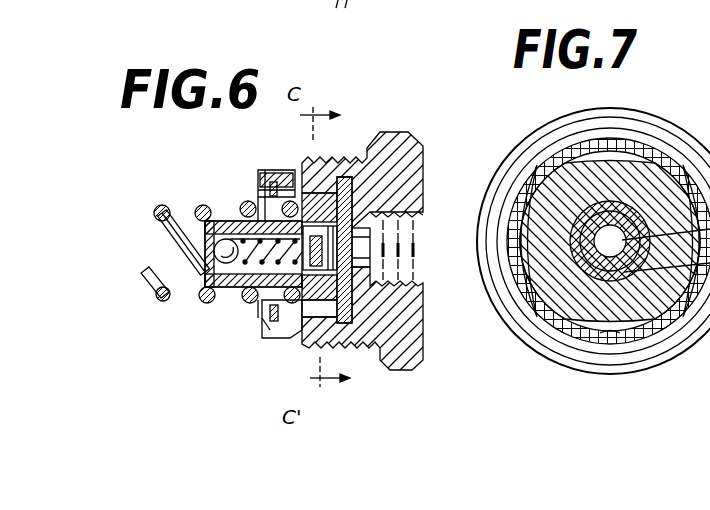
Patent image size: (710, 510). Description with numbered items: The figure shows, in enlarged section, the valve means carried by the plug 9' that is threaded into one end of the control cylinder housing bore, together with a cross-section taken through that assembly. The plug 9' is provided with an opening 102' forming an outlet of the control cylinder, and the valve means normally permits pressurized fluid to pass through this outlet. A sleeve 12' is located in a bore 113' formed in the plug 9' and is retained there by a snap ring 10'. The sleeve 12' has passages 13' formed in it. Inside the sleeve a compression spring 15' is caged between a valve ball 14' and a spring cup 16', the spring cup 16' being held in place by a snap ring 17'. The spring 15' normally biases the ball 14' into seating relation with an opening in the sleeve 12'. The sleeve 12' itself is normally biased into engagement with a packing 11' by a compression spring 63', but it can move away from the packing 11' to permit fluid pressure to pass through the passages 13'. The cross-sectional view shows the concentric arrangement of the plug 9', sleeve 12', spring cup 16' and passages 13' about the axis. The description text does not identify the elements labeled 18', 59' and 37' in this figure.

In FIG. 6, the plug 9' is at (363, 212).
In FIG. 7, the plug 9' is at (593, 278).
In FIG. 6, the snap ring 10' is at (273, 166).
In FIG. 7, the snap ring 10' is at (617, 407).
In FIG. 6, the packing 11' is at (361, 130).
In FIG. 6, the sleeve 12' is at (248, 223).
In FIG. 6, the passages 13' is at (273, 389).
In FIG. 7, the passages 13' is at (640, 318).
In FIG. 6, the valve ball 14' is at (211, 292).
In FIG. 6, the compression spring 15' is at (257, 300).
In FIG. 7, the spring cup 16' is at (588, 292).
In FIG. 6, the snap ring 17' is at (407, 262).
In FIG. 6, the lower housing 18' is at (325, 365).
In FIG. 6, the compression spring 63' is at (173, 225).
In FIG. 6, the opening 102' is at (392, 246).
In FIG. 6, the bore 113' is at (289, 161).
In FIG. 7, the retainer 59' is at (695, 83).
In FIG. 7, the passage 37' is at (695, 109).